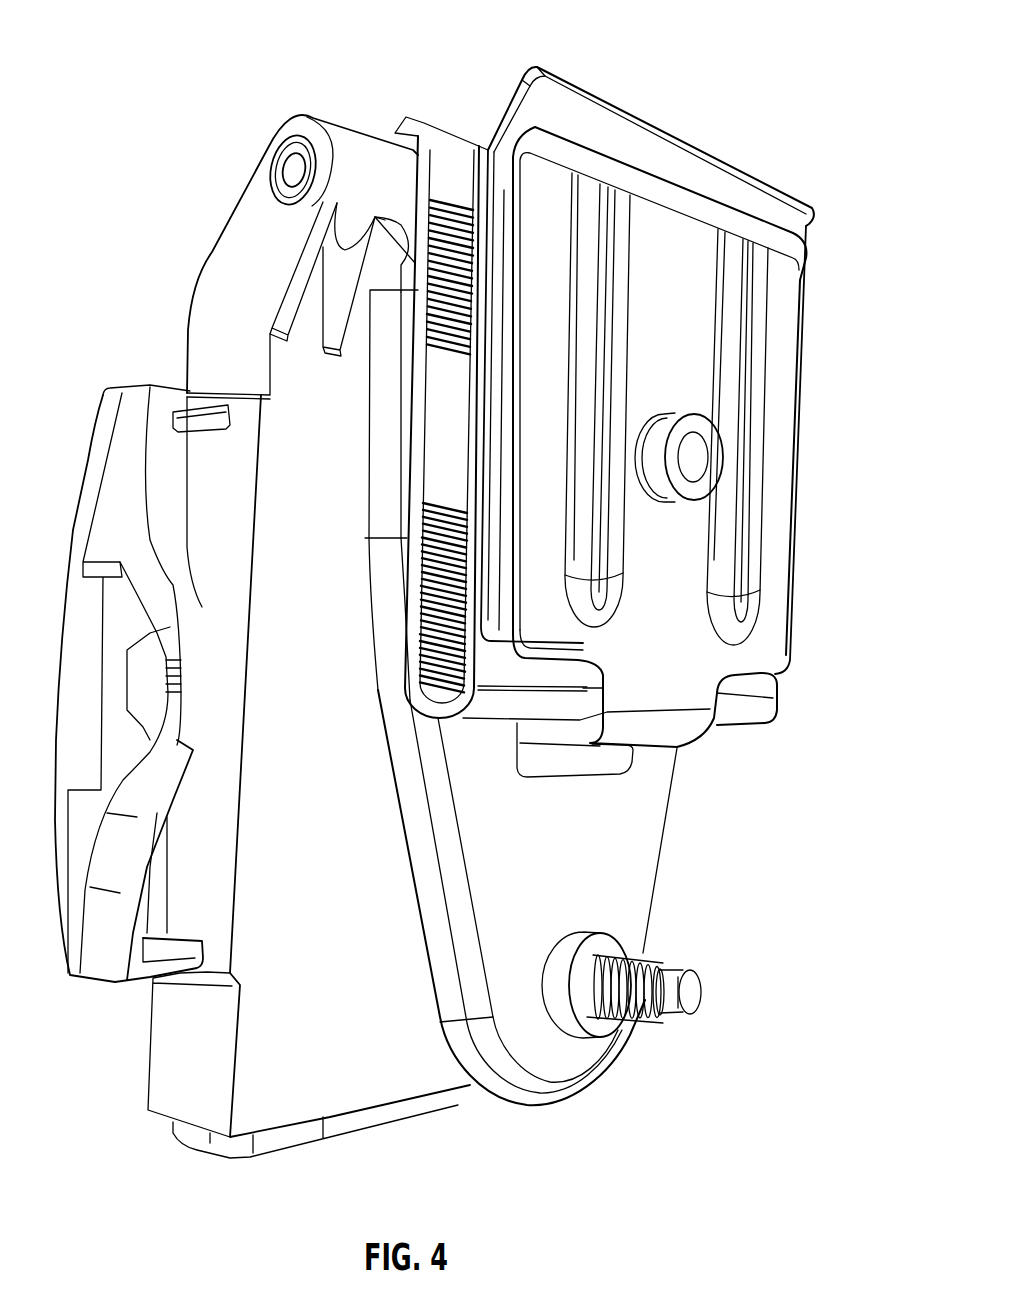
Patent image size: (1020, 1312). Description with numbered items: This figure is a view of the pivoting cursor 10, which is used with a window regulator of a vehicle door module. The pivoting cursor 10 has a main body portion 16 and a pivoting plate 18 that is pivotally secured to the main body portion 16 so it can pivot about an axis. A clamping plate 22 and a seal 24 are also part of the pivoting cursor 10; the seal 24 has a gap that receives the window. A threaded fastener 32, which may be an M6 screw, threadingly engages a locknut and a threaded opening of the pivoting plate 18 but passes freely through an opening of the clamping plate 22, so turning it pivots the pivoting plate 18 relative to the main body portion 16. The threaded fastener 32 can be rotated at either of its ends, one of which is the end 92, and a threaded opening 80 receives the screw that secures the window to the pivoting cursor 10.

The pivoting cursor 10 is at (749, 48).
The main body portion 16 is at (343, 1022).
The pivoting plate 18 is at (633, 852).
The clamping plate 22 is at (755, 523).
The seal 24 is at (770, 230).
The threaded fastener 32 is at (653, 1020).
The threaded opening 80 is at (695, 457).
The end of threaded fastener 92 is at (688, 997).